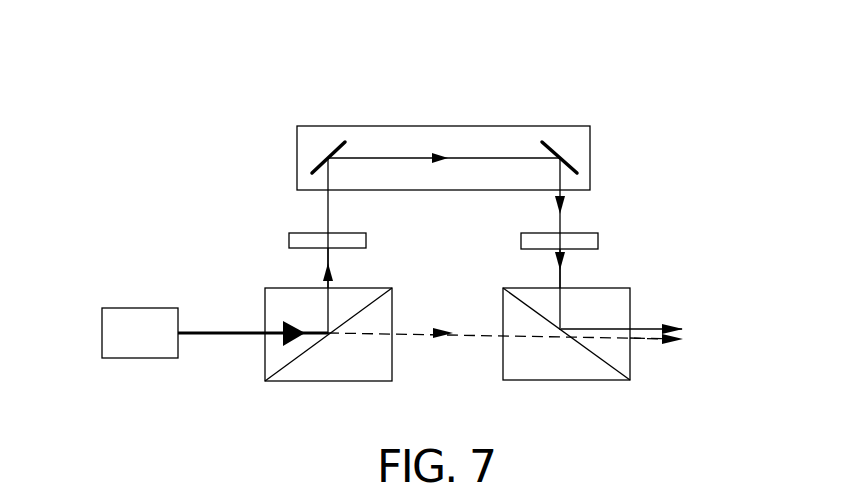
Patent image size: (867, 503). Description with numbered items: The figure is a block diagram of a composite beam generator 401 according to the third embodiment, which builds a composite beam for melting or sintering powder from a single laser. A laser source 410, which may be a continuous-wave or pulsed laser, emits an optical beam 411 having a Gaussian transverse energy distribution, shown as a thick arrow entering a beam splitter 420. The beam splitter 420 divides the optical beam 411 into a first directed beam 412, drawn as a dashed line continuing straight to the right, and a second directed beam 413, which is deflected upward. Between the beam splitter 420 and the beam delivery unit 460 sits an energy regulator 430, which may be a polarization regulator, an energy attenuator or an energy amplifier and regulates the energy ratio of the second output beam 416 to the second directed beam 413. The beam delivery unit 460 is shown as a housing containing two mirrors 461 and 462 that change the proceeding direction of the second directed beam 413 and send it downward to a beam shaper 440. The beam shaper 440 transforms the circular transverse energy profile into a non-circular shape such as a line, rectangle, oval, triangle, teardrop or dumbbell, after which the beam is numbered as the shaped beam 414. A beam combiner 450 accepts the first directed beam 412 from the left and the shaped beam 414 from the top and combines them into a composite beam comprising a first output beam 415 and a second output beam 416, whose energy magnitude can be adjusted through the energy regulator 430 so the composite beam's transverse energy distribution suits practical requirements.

The composite beam generator 401 is at (186, 48).
The laser source 410 is at (140, 308).
The optical beam 411 is at (236, 336).
The first directed beam 412 is at (470, 335).
The second directed beam 413 is at (328, 256).
The shaped second directed beam 414 is at (560, 258).
The first output beam 415 is at (643, 342).
The second output beam 416 is at (644, 323).
The beam splitter 420 is at (333, 381).
The energy regulator 430 is at (300, 233).
The beam shaper 440 is at (521, 237).
The beam combiner 450 is at (545, 380).
The beam delivery unit 460 is at (330, 126).
The mirror 461 is at (312, 170).
The mirror 462 is at (572, 166).